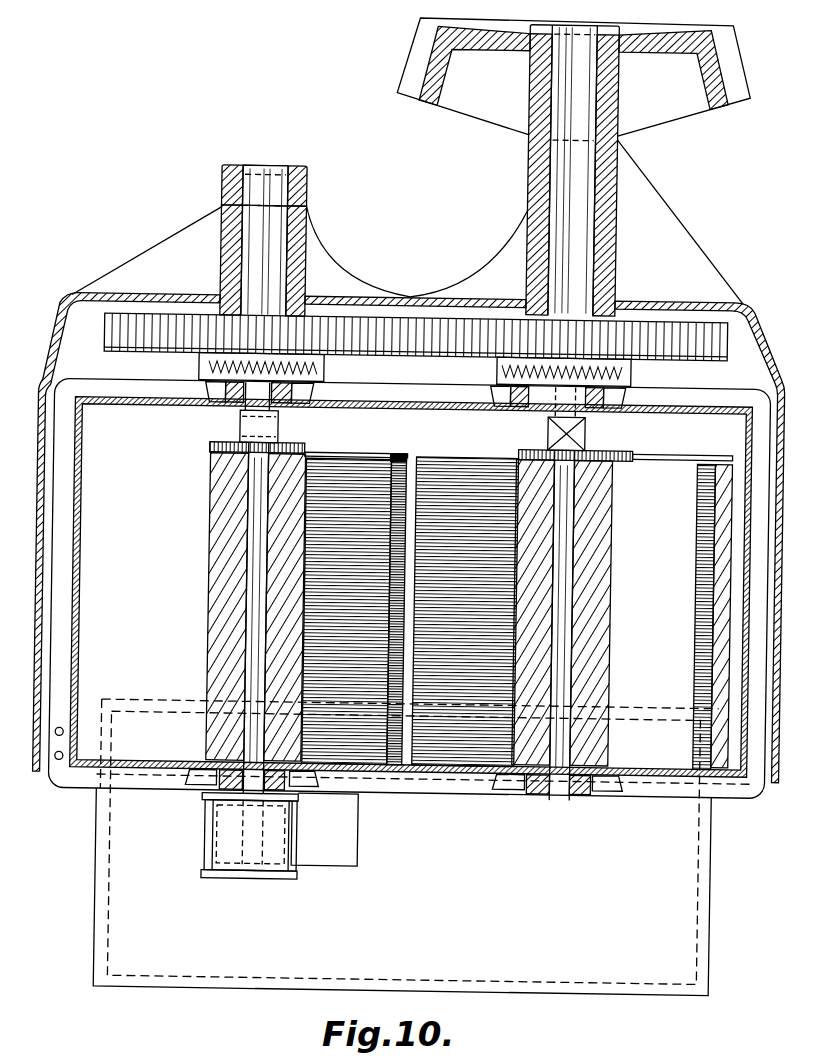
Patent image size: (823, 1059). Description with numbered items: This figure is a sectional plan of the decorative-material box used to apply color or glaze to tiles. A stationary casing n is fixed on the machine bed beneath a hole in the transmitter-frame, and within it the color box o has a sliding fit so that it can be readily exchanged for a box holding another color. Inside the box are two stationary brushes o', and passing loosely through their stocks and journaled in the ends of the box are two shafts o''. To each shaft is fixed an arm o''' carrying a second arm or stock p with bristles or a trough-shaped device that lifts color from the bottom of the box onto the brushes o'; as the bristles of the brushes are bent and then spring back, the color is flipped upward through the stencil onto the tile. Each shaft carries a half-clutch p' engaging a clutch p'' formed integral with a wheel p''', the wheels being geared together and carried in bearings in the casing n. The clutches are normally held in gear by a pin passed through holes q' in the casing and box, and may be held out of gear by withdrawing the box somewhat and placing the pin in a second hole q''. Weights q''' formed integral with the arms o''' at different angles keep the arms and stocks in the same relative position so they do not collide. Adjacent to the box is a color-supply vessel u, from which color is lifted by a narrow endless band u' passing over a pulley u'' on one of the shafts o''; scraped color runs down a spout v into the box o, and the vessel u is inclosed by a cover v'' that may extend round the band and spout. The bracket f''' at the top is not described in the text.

The stationary casing n is at (143, 296).
The color box o is at (411, 613).
The stationary brushes o' is at (448, 593).
The shafts o'' is at (405, 637).
The arm o''' is at (509, 599).
The second arm or stock p is at (546, 598).
The half-clutch p' is at (432, 374).
The clutch p'' is at (378, 408).
The wheel p''' is at (405, 334).
The holes q' is at (78, 708).
The second hole q'' is at (39, 788).
The weights q''' is at (512, 445).
The color-supply vessel u is at (388, 907).
The endless band u' is at (248, 891).
The pulley u'' is at (403, 822).
The spout v is at (324, 829).
The cover v'' is at (422, 842).
The bracket f''' is at (574, 78).